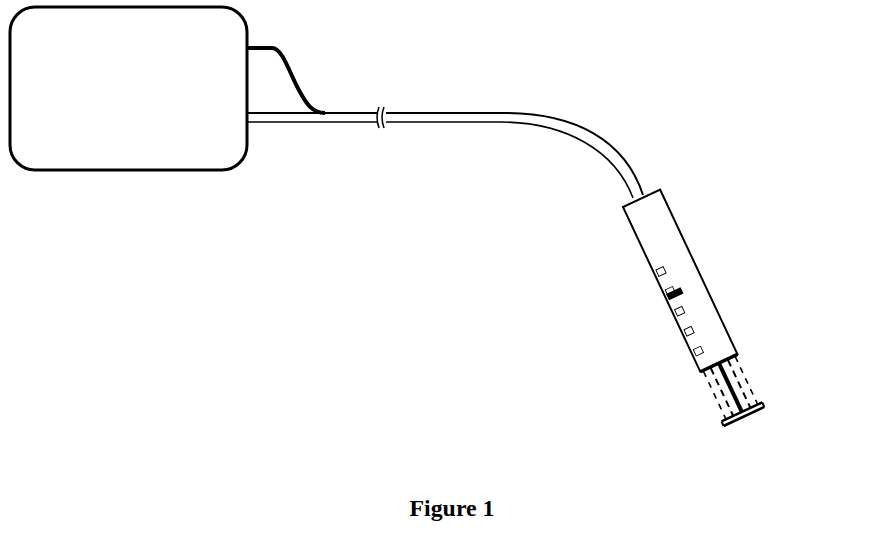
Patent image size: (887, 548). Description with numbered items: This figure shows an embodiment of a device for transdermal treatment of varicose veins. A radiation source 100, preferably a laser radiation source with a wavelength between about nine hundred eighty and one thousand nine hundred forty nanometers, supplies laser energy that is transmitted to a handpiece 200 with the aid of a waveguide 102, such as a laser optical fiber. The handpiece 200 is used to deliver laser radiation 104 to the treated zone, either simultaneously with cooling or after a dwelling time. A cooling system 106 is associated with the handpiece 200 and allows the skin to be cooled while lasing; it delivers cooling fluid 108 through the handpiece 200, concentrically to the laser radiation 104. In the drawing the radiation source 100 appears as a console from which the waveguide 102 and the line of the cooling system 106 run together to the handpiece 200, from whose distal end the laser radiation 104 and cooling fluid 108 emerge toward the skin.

The radiation source 100 is at (106, 102).
The waveguide 102 is at (445, 152).
The cooling system 106 is at (303, 80).
The handpiece 200 is at (668, 322).
The laser radiation 104 is at (723, 392).
The cooling fluid 108 is at (745, 372).